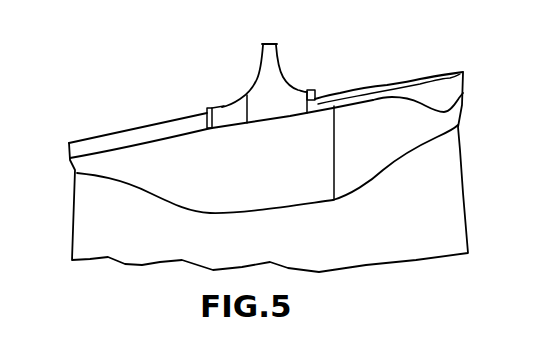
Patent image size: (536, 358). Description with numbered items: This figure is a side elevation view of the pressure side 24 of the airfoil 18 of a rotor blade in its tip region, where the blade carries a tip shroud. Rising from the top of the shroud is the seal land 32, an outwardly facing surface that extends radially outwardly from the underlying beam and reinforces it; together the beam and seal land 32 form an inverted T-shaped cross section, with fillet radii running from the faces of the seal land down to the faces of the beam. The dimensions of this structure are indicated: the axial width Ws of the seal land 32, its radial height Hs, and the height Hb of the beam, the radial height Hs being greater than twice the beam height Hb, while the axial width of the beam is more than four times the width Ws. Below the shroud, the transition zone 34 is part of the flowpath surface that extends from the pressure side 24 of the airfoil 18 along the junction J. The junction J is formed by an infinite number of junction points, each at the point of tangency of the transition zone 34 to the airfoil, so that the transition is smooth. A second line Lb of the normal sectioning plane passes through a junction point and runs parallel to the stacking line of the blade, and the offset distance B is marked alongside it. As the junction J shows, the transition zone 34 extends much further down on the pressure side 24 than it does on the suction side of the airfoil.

The airfoil 18 is at (466, 192).
The pressure side 24 is at (221, 205).
The seal land 32 is at (267, 41).
The transition zone 34 is at (169, 181).
The offset distance B is at (335, 142).
The junction J is at (389, 163).
The second line Lb is at (338, 126).
The axial width of the seal land Ws is at (328, 21).
The radial height of the seal land Hs is at (292, 42).
The height of the beam Hb is at (207, 107).